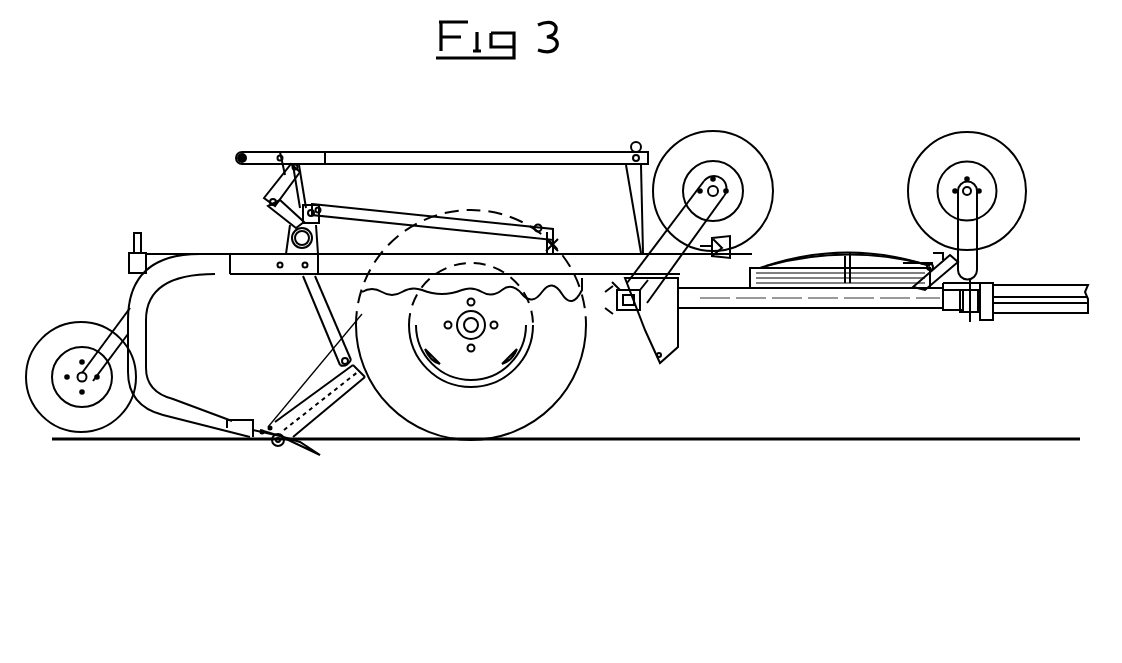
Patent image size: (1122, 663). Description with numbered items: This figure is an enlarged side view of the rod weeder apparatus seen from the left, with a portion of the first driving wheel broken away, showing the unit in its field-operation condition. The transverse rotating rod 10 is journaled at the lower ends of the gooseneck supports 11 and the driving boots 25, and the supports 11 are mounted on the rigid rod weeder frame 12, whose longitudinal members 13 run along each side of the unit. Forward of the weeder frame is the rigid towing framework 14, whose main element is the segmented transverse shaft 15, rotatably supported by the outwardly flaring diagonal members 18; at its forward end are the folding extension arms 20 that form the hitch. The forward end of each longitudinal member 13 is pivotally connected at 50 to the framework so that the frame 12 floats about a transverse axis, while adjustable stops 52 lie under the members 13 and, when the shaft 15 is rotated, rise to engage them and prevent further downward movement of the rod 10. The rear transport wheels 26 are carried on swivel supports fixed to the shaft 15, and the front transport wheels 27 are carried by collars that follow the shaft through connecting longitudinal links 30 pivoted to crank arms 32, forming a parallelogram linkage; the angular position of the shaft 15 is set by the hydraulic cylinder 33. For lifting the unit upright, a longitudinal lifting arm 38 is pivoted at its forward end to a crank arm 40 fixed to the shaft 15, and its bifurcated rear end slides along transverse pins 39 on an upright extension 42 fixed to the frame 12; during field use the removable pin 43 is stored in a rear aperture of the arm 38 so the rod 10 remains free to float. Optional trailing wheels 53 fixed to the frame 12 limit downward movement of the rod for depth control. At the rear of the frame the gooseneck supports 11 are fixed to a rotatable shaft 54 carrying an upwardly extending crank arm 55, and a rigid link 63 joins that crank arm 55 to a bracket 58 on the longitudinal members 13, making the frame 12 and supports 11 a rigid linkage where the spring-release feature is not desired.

The transverse rotating rod 10 is at (277, 449).
The gooseneck supports 11 is at (138, 372).
The rod weeder frame 12 is at (315, 290).
The longitudinal members 13 is at (598, 266).
The towing framework 14 is at (804, 314).
The transverse shaft 15 is at (626, 316).
The diagonal members 18 is at (870, 300).
The folding extension arms 20 is at (1032, 295).
The driving boots 25 is at (318, 396).
The rear transport wheels 26 is at (742, 166).
The front transport wheels 27 is at (944, 150).
The connecting longitudinal links 30 is at (766, 268).
The crank arm 32 is at (918, 270).
The hydraulic cylinder 33 is at (858, 280).
The lifting arm 38 is at (450, 160).
The transverse pins 39 is at (296, 170).
The crank arm 40 is at (634, 202).
The extension 42 is at (270, 192).
The removable pin 43 is at (246, 157).
The pivotal connection 50 is at (664, 360).
The adjustable stops 52 is at (612, 300).
The trailing wheels 53 is at (68, 334).
The rotatable shaft 54 is at (288, 236).
The crank arm 55 is at (314, 226).
The bracket 58 is at (552, 242).
The rigid link 63 is at (372, 218).